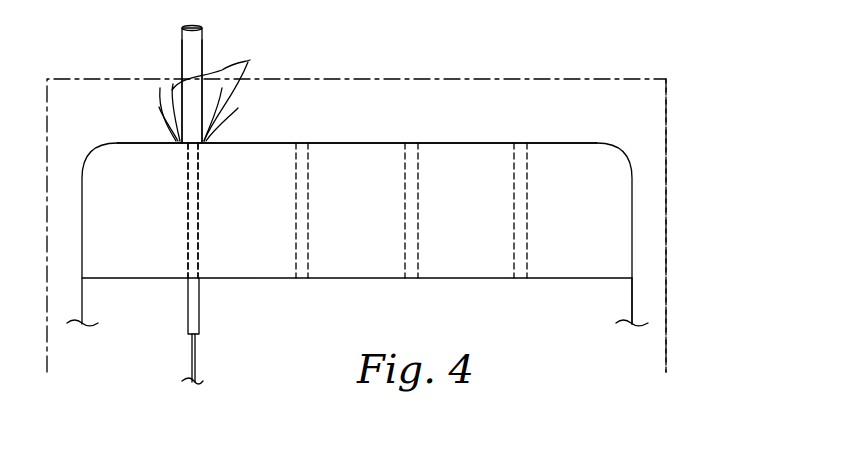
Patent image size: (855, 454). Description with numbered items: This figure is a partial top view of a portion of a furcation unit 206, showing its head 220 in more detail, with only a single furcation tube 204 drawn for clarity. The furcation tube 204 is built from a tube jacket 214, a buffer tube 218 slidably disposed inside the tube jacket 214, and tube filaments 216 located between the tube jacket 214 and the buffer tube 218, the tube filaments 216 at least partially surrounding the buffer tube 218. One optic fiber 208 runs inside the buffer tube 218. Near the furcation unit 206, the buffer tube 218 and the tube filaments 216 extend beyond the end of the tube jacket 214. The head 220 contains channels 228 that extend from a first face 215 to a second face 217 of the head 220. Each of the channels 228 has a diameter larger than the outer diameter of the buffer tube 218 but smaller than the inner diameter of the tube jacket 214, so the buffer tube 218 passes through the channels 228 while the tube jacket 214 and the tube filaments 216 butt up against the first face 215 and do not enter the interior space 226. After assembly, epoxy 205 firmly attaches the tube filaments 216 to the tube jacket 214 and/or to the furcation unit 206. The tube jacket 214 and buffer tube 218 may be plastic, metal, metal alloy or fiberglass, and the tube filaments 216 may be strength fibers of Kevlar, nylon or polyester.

The furcation tube 204 is at (171, 33).
The epoxy 205 is at (627, 77).
The furcation unit 206 is at (657, 113).
The optic fiber 208 is at (185, 356).
The tube jacket 214 is at (182, 62).
The first face 215 is at (482, 143).
The tube filaments 216 is at (248, 62).
The second face 217 is at (465, 279).
The buffer tube 218 is at (200, 310).
The head 220 is at (635, 211).
The interior space 226 is at (598, 307).
The channels 228 is at (310, 170).